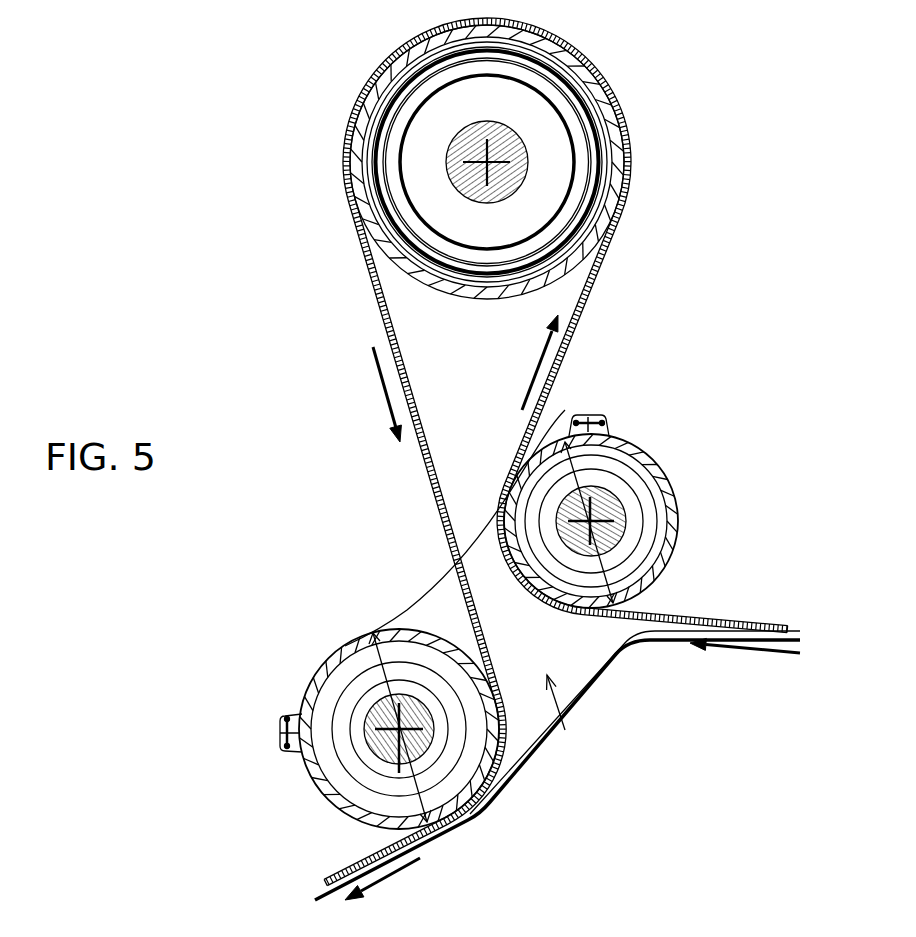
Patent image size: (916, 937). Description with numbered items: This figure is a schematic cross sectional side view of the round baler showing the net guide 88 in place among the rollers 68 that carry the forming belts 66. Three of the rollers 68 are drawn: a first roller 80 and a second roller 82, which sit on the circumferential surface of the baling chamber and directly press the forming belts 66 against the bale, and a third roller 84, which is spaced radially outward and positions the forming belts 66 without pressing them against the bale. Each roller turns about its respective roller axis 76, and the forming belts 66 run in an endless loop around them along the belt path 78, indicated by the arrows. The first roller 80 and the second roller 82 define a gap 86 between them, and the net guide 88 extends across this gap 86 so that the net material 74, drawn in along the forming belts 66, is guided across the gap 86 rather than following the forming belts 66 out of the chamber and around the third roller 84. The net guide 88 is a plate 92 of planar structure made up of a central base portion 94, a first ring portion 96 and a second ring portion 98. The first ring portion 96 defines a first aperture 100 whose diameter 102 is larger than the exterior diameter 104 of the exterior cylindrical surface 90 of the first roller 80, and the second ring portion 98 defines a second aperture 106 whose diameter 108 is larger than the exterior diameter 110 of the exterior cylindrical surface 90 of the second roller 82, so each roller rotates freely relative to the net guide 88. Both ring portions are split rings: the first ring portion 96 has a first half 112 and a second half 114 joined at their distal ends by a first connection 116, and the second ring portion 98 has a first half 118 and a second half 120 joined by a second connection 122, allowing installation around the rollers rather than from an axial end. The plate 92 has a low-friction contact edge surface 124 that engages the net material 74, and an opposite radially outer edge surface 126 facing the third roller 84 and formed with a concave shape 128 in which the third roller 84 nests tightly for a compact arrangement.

The forming belts 66 is at (800, 630).
The rollers 68 is at (618, 138).
The net material 74 is at (800, 640).
The roller axis 76 is at (463, 157).
The belt path 78 is at (380, 385).
The first roller 80 is at (662, 547).
The second roller 82 is at (327, 803).
The third roller 84 is at (598, 100).
The gap 86 is at (591, 731).
The net guide 88 is at (603, 673).
The exterior cylindrical surface 90 is at (592, 78).
The plate 92 is at (428, 603).
The central base portion 94 is at (515, 643).
The first ring portion 96 is at (678, 480).
The second ring portion 98 is at (307, 675).
The first aperture 100 is at (645, 467).
The diameter 102 is at (688, 399).
The exterior diameter 104 is at (615, 447).
The second aperture 106 is at (277, 725).
The diameter 108 is at (249, 673).
The exterior diameter 110 is at (350, 650).
The first half 112 is at (553, 423).
The second half 114 is at (687, 520).
The first connection 116 is at (597, 420).
The first half 118 is at (297, 698).
The second half 120 is at (303, 763).
The second connection 122 is at (280, 742).
The contact edge surface 124 is at (570, 710).
The radially outer edge surface 126 is at (475, 543).
The concave shape 128 is at (437, 583).